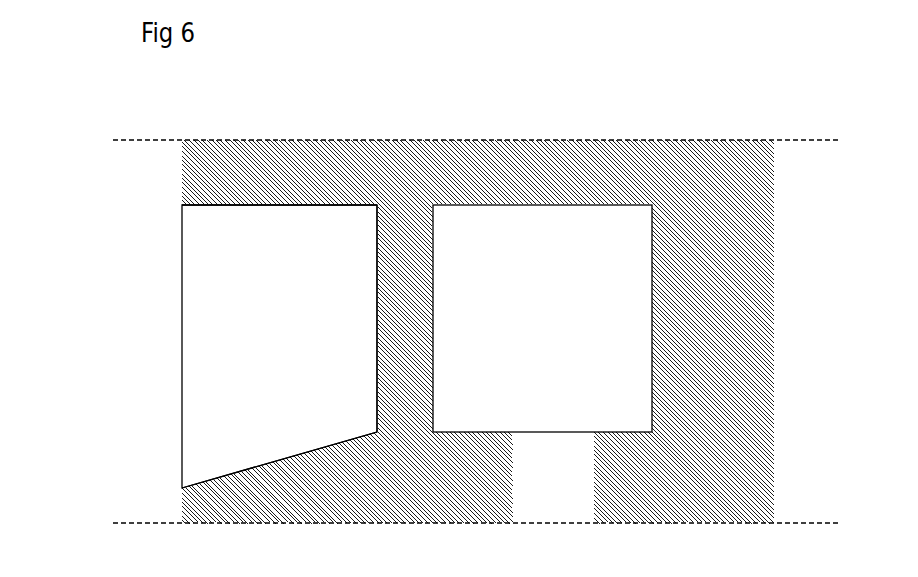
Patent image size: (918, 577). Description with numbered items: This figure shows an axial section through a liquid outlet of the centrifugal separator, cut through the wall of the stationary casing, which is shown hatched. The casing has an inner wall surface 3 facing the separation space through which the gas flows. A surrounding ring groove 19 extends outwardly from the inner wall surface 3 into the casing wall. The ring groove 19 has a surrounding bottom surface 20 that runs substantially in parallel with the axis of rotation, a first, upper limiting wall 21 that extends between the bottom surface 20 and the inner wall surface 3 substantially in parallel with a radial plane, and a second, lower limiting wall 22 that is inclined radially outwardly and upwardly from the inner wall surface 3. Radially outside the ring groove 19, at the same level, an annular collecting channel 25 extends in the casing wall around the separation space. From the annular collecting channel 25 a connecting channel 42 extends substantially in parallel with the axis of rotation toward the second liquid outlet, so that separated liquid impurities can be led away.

The inner wall surface 3 is at (182, 165).
The ring groove 19 is at (182, 292).
The bottom surface 20 is at (377, 308).
The first, upper limiting wall 21 is at (273, 205).
The second, lower limiting wall 22 is at (285, 458).
The annular collecting channel 25 is at (529, 312).
The connecting channel 42 is at (539, 497).